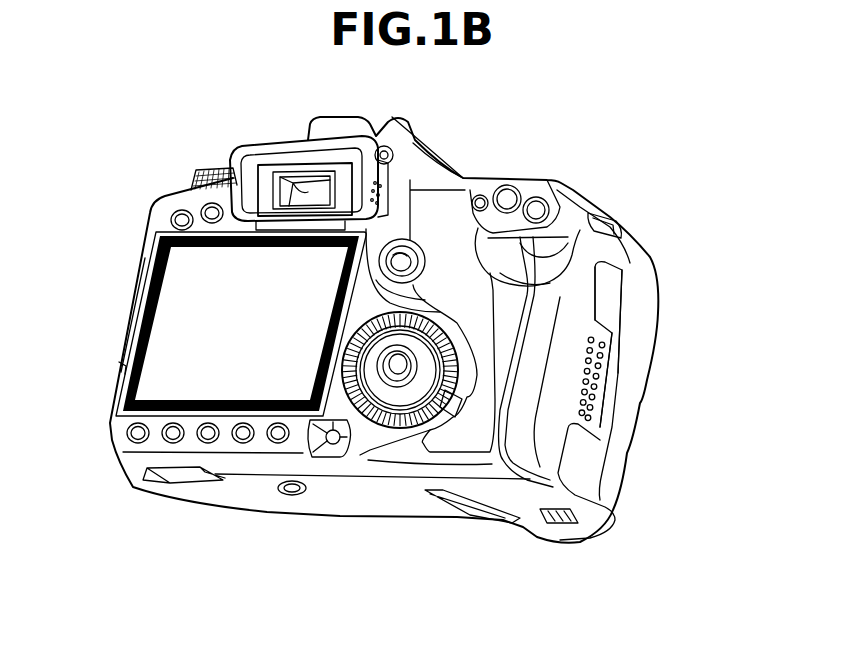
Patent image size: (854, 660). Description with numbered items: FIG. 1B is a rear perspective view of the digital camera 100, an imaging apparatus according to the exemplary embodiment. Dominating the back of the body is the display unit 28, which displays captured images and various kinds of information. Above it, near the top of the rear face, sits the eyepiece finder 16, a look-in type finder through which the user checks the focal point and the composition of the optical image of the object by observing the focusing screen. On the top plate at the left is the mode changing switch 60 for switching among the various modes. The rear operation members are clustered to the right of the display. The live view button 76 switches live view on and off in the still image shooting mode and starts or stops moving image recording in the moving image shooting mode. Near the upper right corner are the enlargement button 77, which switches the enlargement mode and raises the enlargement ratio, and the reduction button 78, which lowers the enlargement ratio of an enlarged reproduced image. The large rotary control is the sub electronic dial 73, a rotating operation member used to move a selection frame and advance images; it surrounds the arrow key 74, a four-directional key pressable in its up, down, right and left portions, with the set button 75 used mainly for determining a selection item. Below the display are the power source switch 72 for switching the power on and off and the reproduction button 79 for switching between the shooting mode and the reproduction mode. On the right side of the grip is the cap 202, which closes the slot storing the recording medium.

The digital camera 100 is at (638, 174).
The eyepiece finder 16 is at (308, 198).
The display unit 28 is at (165, 310).
The mode changing switch 60 is at (207, 169).
The power source switch 72 is at (328, 457).
The sub electronic dial 73 is at (386, 398).
The arrow key 74 is at (396, 372).
The set button 75 is at (447, 412).
The live view button 76 is at (392, 253).
The enlargement button 77 is at (541, 204).
The reduction button 78 is at (505, 195).
The reproduction button 79 is at (280, 442).
The cap 202 is at (556, 378).